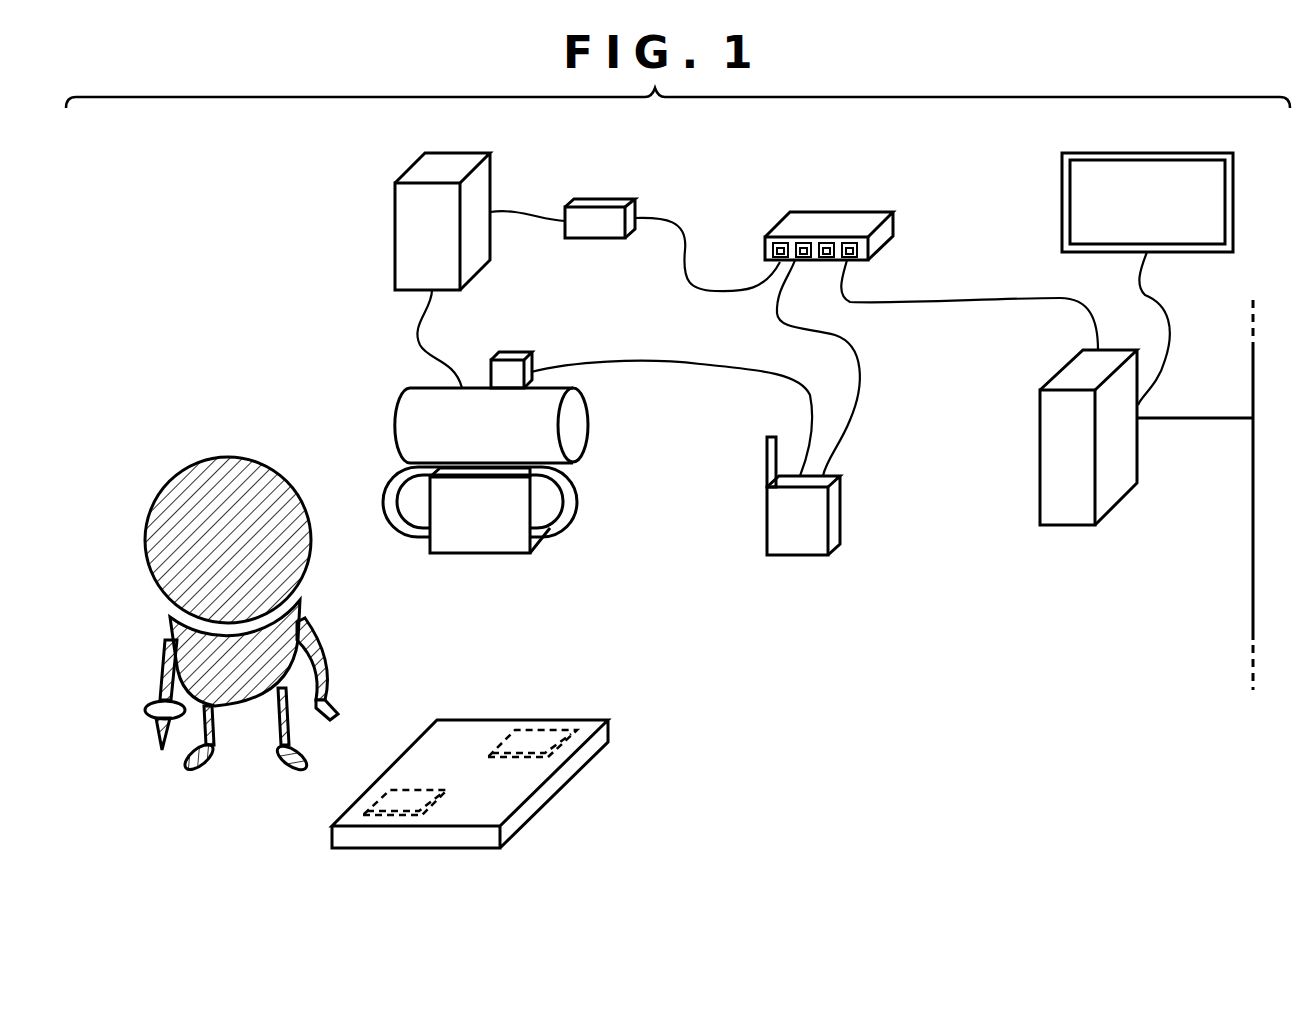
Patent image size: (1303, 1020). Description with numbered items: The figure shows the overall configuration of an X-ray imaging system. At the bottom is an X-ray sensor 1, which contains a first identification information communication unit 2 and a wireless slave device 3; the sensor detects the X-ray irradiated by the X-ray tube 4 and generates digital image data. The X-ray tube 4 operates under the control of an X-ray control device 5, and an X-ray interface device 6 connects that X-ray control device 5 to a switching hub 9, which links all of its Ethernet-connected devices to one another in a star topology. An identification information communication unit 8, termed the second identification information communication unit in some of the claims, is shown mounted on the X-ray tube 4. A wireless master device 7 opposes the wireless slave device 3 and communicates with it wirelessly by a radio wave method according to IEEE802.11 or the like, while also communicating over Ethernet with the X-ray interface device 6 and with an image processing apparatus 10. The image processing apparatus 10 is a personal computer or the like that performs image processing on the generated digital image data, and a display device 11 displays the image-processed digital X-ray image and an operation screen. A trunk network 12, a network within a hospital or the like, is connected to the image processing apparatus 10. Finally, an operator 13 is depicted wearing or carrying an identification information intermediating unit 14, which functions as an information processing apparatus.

The X-ray sensor 1 is at (512, 801).
The first identification information communication unit 2 is at (397, 793).
The wireless slave device 3 is at (545, 735).
The X-ray tube 4 is at (408, 428).
The X-ray control device 5 is at (400, 214).
The X-ray interface device 6 is at (607, 202).
The wireless master device 7 is at (833, 515).
The identification information communication unit 8 is at (507, 360).
The switching hub 9 is at (848, 218).
The image processing apparatus 10 is at (1065, 520).
The display device 11 is at (1078, 197).
The trunk network 12 is at (1253, 612).
The operator 13 is at (256, 460).
The identification information intermediating unit 14 is at (146, 715).